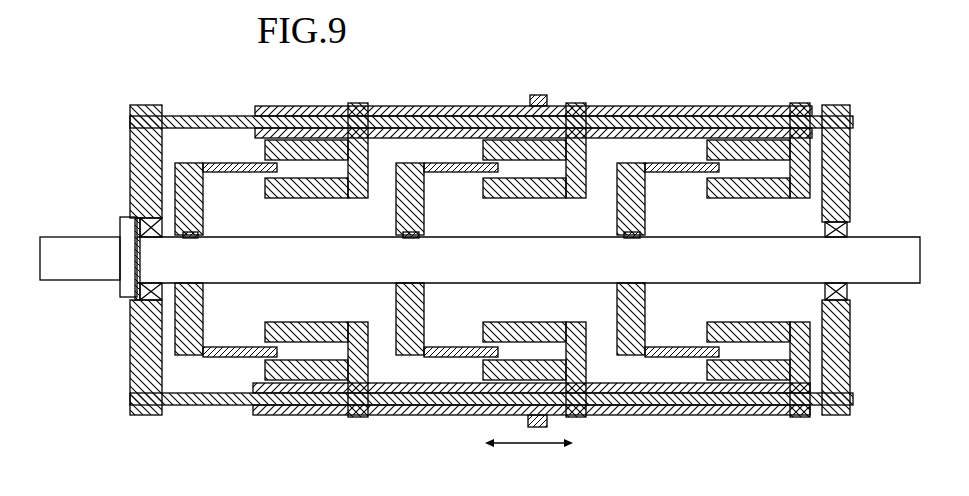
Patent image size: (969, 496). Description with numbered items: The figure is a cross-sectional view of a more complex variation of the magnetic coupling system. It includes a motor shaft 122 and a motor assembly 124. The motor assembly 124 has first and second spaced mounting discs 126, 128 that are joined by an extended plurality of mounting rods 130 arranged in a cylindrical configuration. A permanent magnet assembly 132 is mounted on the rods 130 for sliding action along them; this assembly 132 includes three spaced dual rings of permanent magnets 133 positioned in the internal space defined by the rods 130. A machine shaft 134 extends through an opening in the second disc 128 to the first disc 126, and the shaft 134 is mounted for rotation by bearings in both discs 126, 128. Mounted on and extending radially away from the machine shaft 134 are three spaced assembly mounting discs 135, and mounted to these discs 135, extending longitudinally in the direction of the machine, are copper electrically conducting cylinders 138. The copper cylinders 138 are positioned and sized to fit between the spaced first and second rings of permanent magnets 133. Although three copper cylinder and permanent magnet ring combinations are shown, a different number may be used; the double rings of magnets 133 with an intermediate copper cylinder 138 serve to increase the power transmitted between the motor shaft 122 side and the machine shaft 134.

The motor shaft 122 is at (73, 244).
The motor assembly 124 is at (179, 74).
The first mounting disc 126 is at (130, 154).
The second mounting disc 128 is at (851, 197).
The mounting rods 130 is at (232, 116).
The permanent magnet assembly 132 is at (470, 160).
The permanent magnets 133 is at (375, 155).
The machine shaft 134 is at (905, 284).
The assembly mounting discs 135 is at (205, 217).
The copper electrically conducting cylinders 138 is at (245, 165).